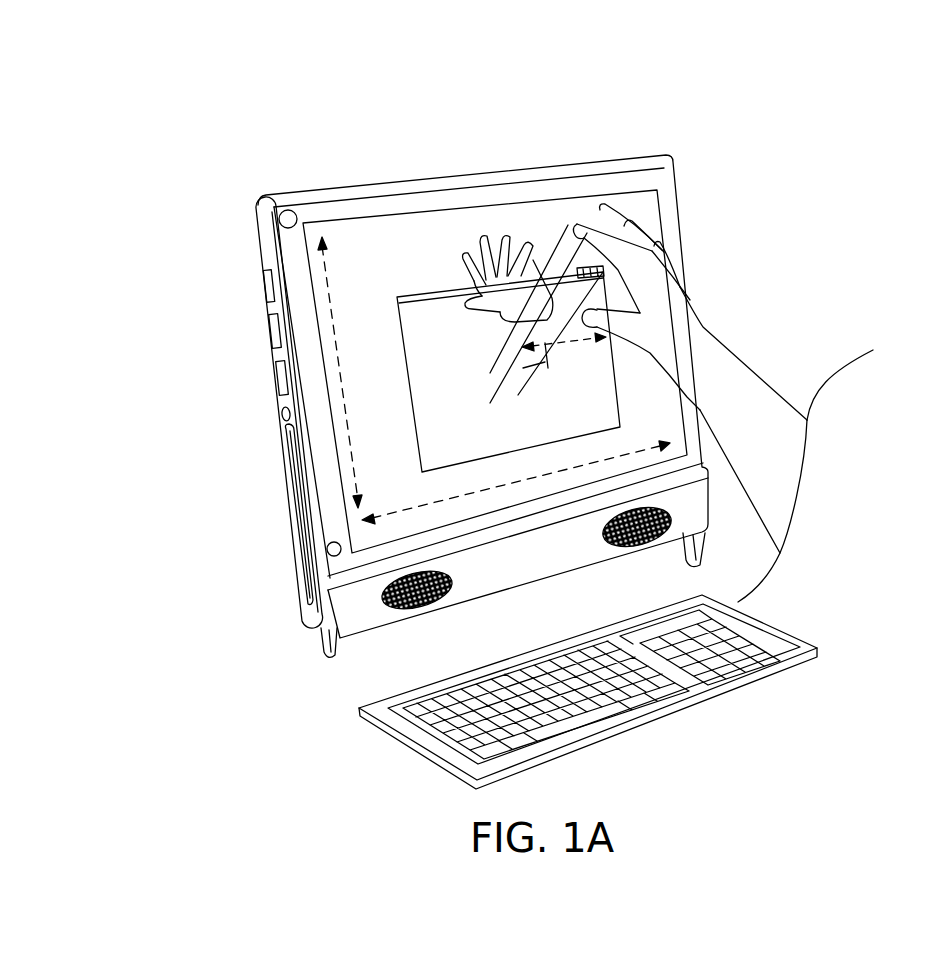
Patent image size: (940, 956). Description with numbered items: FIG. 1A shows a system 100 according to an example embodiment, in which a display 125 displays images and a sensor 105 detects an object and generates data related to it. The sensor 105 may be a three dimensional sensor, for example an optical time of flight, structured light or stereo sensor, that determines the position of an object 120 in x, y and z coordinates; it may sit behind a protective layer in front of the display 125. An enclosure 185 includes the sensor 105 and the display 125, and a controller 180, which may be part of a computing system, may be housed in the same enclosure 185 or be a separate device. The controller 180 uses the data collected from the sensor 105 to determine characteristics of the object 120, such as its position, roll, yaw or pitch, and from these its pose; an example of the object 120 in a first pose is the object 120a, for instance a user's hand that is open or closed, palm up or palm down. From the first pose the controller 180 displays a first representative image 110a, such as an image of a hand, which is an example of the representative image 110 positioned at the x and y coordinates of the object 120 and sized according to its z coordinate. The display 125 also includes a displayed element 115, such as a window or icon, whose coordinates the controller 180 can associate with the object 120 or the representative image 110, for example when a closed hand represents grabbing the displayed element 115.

The system 100 is at (356, 160).
The sensor 105 is at (279, 218).
The representative image 110 is at (512, 238).
The first representative image 110a is at (508, 279).
The displayed element 115 is at (432, 290).
The object 120 is at (699, 322).
The object in a first pose 120a is at (723, 403).
The display 125 is at (387, 215).
The controller 180 is at (270, 333).
The enclosure 185 is at (312, 437).